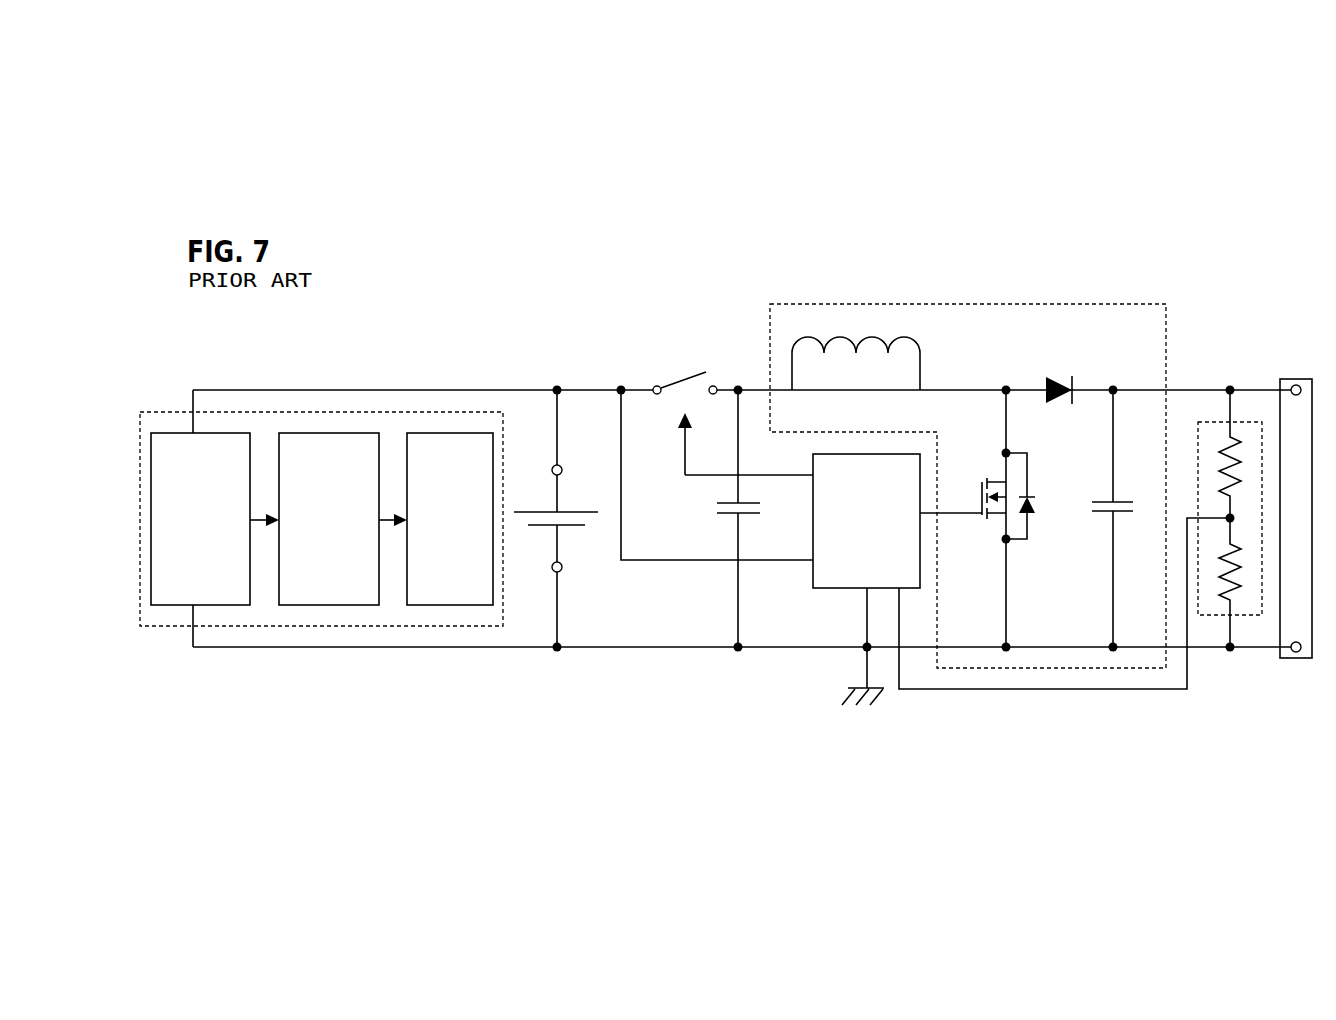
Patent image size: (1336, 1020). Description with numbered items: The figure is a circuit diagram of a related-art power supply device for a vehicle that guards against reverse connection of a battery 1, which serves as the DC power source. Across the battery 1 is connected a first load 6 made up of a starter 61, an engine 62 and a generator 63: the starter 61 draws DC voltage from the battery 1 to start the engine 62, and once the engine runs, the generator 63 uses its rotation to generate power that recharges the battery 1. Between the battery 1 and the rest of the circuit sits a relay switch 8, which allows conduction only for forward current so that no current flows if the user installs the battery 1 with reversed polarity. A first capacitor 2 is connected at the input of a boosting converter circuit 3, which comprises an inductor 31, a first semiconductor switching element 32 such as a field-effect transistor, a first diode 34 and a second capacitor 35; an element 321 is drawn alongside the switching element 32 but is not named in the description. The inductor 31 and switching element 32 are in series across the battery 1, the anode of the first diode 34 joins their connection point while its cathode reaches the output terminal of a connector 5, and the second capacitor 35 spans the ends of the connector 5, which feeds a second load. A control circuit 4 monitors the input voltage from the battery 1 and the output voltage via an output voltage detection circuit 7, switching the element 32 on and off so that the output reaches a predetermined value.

The battery 1 is at (571, 540).
The first capacitor 2 is at (750, 521).
The boosting converter circuit 3 is at (813, 297).
The control circuit 4 is at (806, 578).
The connector 5 is at (1300, 368).
The first load 6 is at (262, 403).
The output voltage detection circuit 7 is at (1252, 625).
The relay switch 8 is at (680, 368).
The inductor 31 is at (856, 350).
The first semiconductor switching element 32 is at (984, 521).
The body diode 321 is at (1041, 496).
The first diode 34 is at (1060, 403).
The second capacitor 35 is at (1127, 521).
The starter 61 is at (180, 613).
The engine 62 is at (313, 613).
The generator 63 is at (438, 613).